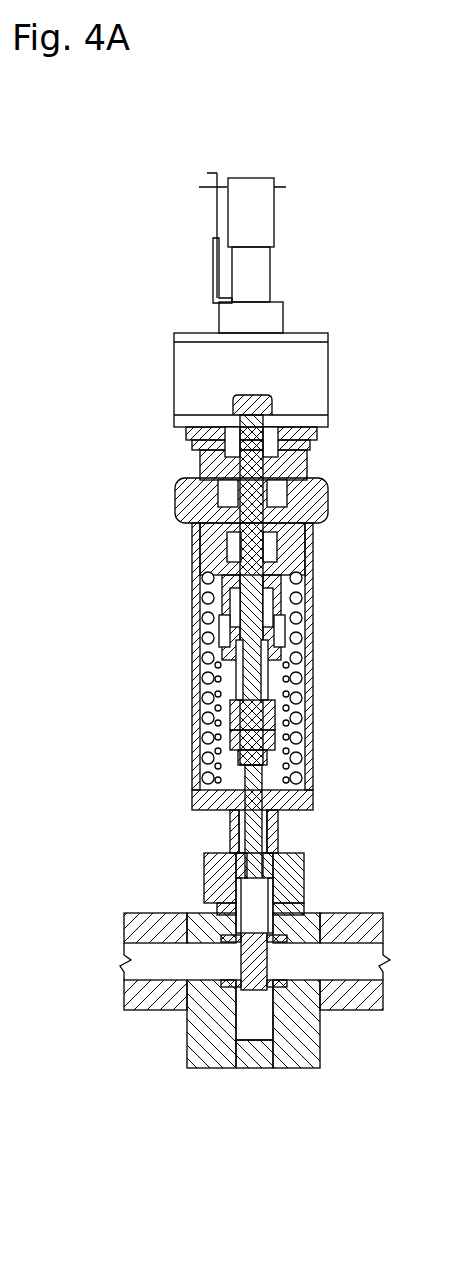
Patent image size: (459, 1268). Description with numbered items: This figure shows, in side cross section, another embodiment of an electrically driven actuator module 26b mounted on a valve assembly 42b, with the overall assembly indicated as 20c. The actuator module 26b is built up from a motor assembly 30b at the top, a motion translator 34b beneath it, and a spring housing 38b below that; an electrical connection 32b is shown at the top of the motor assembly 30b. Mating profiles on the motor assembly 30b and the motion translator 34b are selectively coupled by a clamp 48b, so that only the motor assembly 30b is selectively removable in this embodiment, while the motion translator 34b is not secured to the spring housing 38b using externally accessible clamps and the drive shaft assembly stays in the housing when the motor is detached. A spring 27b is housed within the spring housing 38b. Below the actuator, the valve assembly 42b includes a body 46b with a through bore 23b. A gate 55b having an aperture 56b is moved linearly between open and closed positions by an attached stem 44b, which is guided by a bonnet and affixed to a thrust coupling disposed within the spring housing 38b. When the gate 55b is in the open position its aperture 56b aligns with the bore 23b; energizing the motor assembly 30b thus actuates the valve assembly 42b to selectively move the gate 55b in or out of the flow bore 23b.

The valve body 20c is at (126, 1038).
The through bore 23b is at (160, 950).
The actuator module 26b is at (160, 601).
The spring 27b is at (290, 707).
The motor assembly 30b is at (174, 370).
The electrical connector 32b is at (271, 266).
The motion translator 34b is at (347, 535).
The spring housing 38b is at (192, 669).
The valve assembly 42b is at (326, 851).
The stem 44b is at (255, 838).
The body 46b is at (190, 915).
The clamp 48b is at (332, 497).
The gate 55b is at (269, 958).
The aperture 56b is at (252, 918).